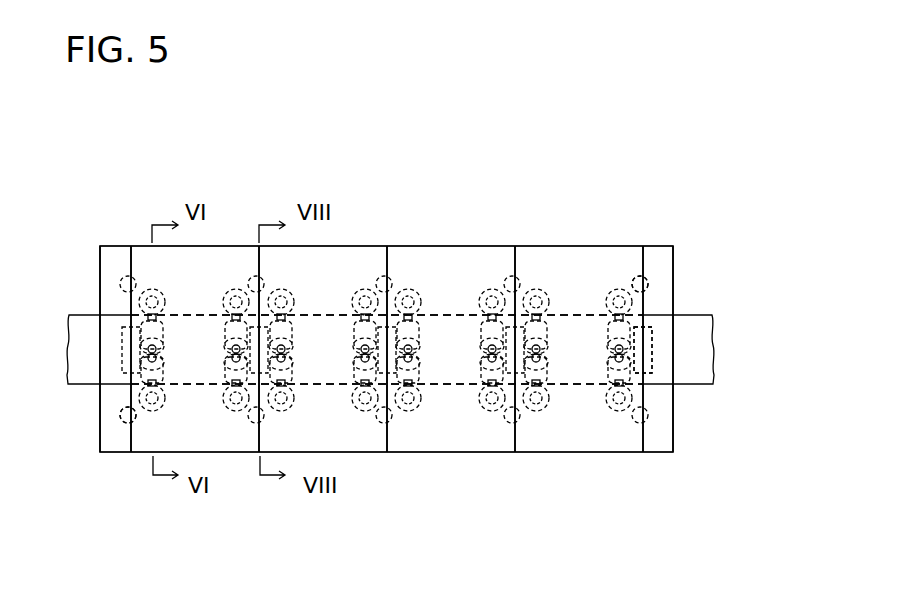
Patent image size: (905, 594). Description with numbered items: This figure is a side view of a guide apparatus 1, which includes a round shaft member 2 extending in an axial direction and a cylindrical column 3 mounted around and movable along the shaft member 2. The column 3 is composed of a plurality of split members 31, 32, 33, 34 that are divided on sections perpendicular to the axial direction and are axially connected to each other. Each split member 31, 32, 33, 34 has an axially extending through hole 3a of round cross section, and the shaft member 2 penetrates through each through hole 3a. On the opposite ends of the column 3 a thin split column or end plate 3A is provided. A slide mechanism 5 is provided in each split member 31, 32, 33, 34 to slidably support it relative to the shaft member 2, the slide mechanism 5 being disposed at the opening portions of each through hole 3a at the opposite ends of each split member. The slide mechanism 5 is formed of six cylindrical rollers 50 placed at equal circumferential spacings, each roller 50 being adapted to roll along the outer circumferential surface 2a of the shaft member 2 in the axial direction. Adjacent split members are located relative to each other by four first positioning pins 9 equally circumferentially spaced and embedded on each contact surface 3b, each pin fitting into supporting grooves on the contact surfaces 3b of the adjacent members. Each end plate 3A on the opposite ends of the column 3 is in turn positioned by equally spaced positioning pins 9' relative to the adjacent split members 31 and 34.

The guide apparatus 1 is at (463, 153).
The shaft member 2 is at (85, 313).
The outer circumferential surface 2a is at (578, 386).
The column 3 is at (538, 212).
The through hole 3a is at (565, 326).
The contact surface 3b is at (385, 265).
The end plate 3A is at (108, 446).
The slide mechanism 5 is at (465, 333).
The first positioning pin 9 is at (386, 367).
The positioning pin 9' is at (375, 312).
The split member 31 is at (226, 452).
The split member 32 is at (375, 448).
The split member 33 is at (507, 446).
The split member 34 is at (618, 445).
The cylindrical roller 50 is at (640, 298).